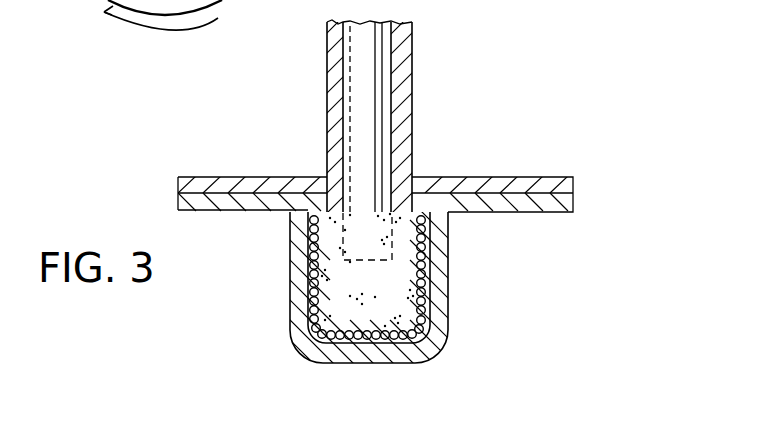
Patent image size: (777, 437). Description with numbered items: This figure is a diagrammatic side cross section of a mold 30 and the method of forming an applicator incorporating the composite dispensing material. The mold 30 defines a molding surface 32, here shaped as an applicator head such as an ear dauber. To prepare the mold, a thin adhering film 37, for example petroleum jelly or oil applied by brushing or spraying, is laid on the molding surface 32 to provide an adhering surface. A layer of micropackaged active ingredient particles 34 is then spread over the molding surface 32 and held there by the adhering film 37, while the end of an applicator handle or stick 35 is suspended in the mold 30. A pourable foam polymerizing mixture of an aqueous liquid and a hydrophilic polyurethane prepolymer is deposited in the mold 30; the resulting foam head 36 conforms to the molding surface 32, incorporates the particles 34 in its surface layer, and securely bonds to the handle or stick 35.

The mold 30 is at (497, 268).
The molding surface 32 is at (300, 298).
The micropackaged active ingredient particles 34 is at (428, 300).
The applicator handle or stick 35 is at (377, 120).
The foam head 36 is at (330, 217).
The adhering film 37 is at (310, 218).